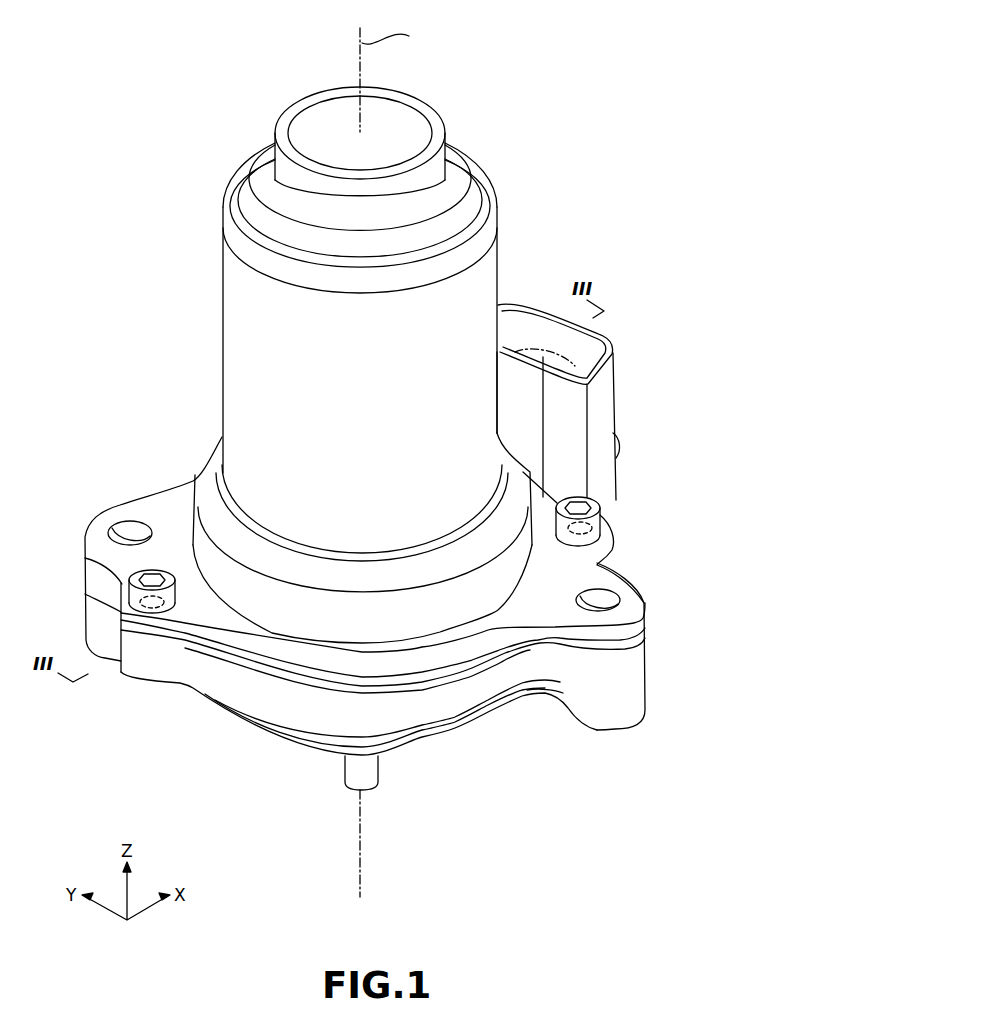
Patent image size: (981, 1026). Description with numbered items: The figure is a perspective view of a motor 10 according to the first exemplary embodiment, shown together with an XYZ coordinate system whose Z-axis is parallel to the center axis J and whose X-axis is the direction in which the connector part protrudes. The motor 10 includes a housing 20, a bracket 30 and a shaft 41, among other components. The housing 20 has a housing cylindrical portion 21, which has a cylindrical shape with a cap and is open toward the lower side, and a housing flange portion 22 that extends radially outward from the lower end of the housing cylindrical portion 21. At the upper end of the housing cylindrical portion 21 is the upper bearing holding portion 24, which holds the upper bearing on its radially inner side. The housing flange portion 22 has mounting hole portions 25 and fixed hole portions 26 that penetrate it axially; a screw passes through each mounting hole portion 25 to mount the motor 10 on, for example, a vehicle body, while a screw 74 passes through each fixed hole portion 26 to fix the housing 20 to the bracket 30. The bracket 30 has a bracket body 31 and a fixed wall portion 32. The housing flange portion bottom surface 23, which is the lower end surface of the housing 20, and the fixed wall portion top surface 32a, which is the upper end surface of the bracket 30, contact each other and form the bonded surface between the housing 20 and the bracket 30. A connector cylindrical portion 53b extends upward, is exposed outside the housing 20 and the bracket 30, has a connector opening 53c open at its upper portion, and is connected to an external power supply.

The motor 10 is at (638, 99).
The housing 20 is at (501, 229).
The housing cylindrical portion 21 is at (238, 308).
The housing flange portion 22 is at (147, 510).
The housing flange portion bottom surface 23 is at (612, 650).
The upper bearing holding portion 24 is at (428, 165).
The mounting hole portion 25 is at (124, 525).
The fixed hole portion 26 is at (146, 604).
The bracket 30 is at (462, 731).
The bracket body 31 is at (418, 738).
The fixed wall portion 32 is at (242, 687).
The fixed wall portion top surface 32a is at (602, 660).
The shaft 41 is at (371, 782).
The connector cylindrical portion 53b is at (595, 403).
The connector opening 53c is at (578, 348).
The screw 74 is at (123, 592).